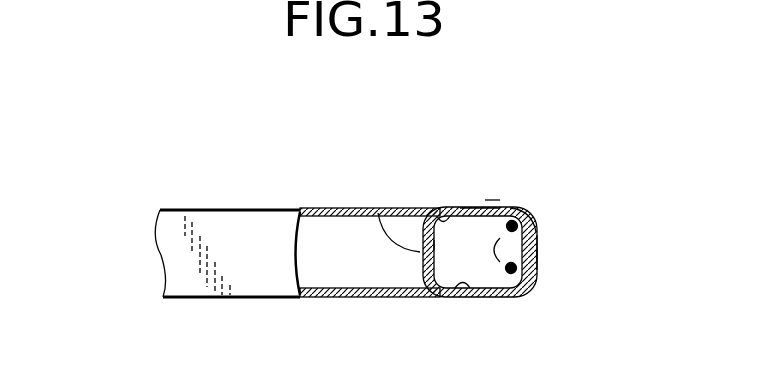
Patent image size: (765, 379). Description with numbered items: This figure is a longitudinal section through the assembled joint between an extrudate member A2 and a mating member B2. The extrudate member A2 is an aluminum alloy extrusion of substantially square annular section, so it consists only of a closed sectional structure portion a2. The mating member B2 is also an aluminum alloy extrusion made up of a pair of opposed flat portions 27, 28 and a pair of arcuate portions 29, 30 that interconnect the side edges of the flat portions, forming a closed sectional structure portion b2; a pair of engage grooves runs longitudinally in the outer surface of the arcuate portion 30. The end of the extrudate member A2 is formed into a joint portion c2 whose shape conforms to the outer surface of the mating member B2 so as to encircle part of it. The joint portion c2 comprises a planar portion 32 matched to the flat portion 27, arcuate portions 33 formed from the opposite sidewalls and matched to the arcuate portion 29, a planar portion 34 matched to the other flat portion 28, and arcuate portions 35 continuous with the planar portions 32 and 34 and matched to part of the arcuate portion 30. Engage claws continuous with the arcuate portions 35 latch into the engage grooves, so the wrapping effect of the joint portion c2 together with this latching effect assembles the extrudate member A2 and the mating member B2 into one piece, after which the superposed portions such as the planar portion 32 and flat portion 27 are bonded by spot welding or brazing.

The extrudate member A2 is at (237, 202).
The closed sectional structure portion a2 is at (239, 300).
The closed sectional structure portion b2 is at (418, 228).
The joint portion c2 is at (487, 197).
The mating member B2 is at (550, 271).
The flat portion 27 is at (447, 213).
The flat portion 28 is at (455, 291).
The arcuate portion 29 is at (372, 209).
The arcuate portion 30 is at (516, 208).
The planar portion 32 is at (472, 209).
The arcuate portions 33 is at (411, 258).
The planar portion 34 is at (478, 293).
The arcuate portions 35 is at (524, 209).